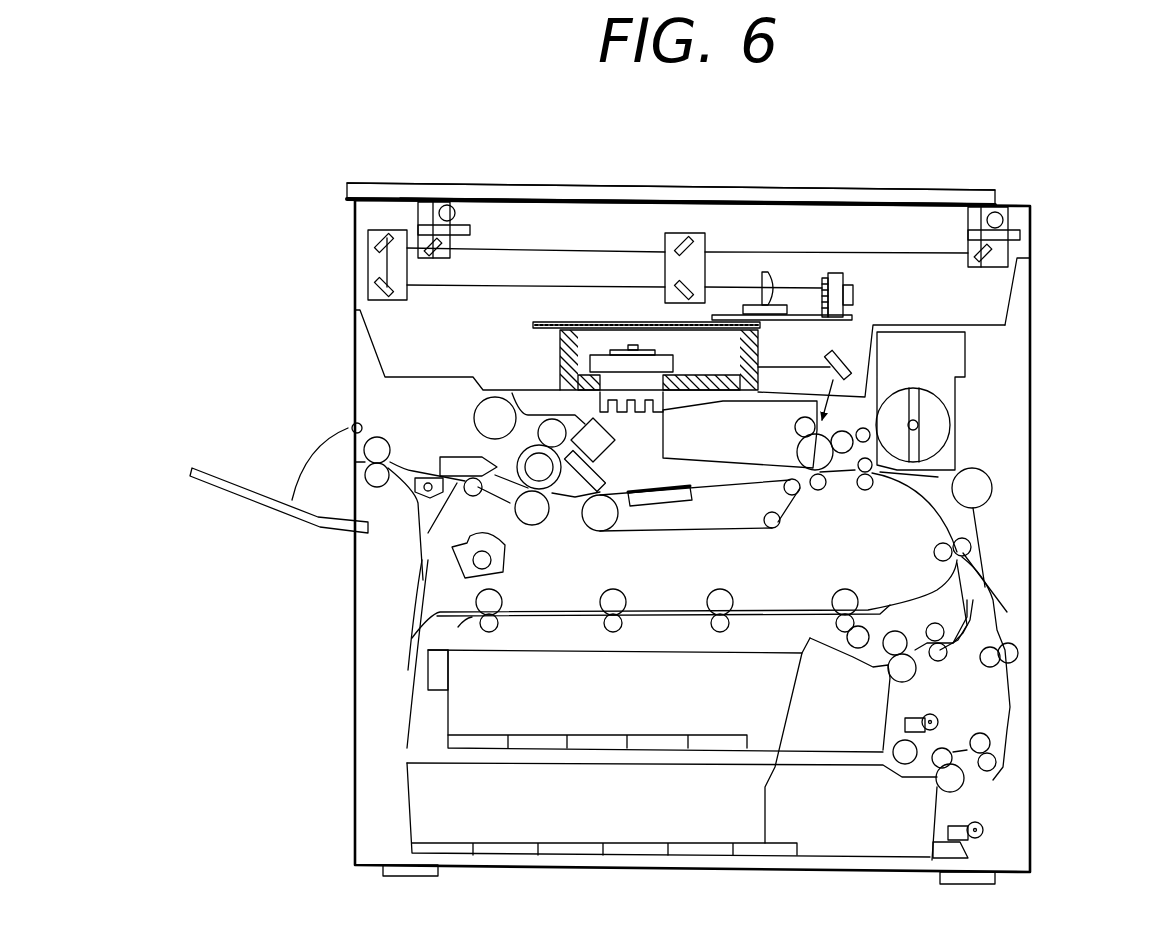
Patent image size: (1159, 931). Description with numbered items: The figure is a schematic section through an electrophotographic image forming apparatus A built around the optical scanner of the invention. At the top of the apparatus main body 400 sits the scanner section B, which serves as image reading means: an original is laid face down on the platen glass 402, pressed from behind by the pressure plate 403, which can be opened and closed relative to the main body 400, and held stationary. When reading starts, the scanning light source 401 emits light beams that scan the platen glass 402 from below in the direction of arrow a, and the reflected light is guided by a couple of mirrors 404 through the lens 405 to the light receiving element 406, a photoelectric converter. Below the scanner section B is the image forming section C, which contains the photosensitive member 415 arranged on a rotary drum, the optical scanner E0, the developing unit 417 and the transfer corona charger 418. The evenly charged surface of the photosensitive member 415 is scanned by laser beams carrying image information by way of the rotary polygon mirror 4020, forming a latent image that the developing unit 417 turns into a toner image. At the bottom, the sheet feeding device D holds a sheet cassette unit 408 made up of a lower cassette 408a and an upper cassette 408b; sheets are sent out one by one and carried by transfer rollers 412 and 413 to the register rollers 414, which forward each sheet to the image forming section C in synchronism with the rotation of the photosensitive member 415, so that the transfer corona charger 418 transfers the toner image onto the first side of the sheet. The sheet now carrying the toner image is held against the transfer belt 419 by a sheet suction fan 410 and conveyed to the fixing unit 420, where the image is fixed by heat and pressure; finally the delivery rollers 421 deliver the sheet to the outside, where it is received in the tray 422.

The image forming apparatus A is at (276, 187).
The scanner section B is at (886, 196).
The image forming section C is at (984, 434).
The sheet feeding device D is at (1036, 707).
The optical scanner E0 is at (548, 367).
The arrow (scanning direction) a is at (588, 232).
The apparatus main body 400 is at (1033, 270).
The scanning light source 401 is at (450, 200).
The platen glass 402 is at (648, 195).
The pressure plate 403 is at (762, 195).
The mirrors 404 is at (378, 243).
The lens 405 is at (765, 272).
The light receiving element 406 is at (825, 273).
The sheet cassette unit 408 is at (596, 749).
The lower cassette 408a is at (412, 790).
The upper cassette 408b is at (453, 712).
The sheet suction fan 410 is at (670, 507).
The transfer rollers 412 is at (840, 592).
The transfer rollers 413 is at (973, 540).
The register rollers 414 is at (867, 492).
The photosensitive member 415 is at (800, 453).
The developing unit 417 is at (958, 355).
The transfer corona charger 418 is at (818, 492).
The transfer belt 419 is at (627, 532).
The fixing unit 420 is at (542, 517).
The delivery rollers 421 is at (388, 448).
The tray 422 is at (248, 472).
The rotary polygon mirror 4020 is at (587, 362).